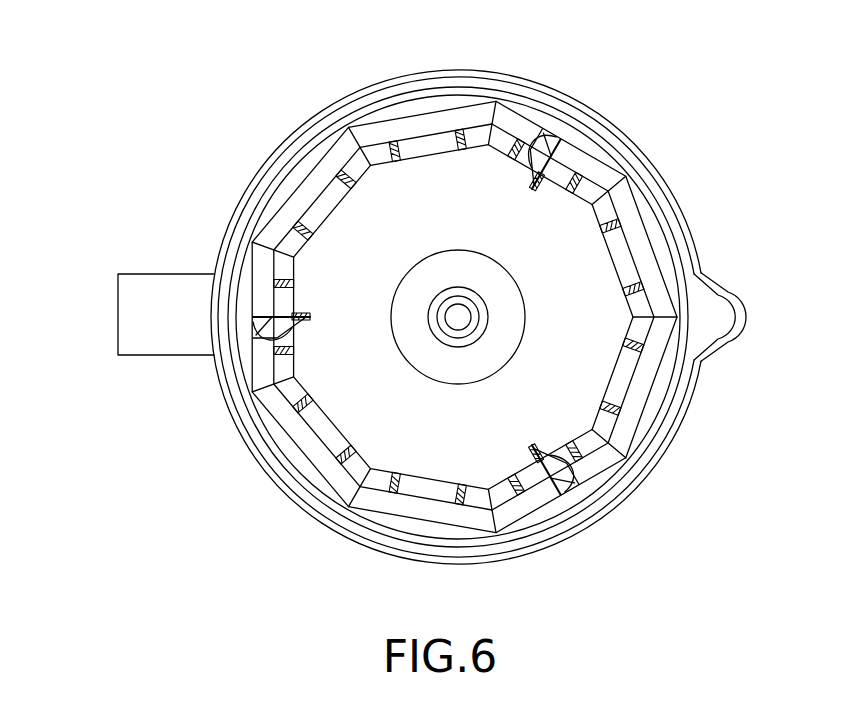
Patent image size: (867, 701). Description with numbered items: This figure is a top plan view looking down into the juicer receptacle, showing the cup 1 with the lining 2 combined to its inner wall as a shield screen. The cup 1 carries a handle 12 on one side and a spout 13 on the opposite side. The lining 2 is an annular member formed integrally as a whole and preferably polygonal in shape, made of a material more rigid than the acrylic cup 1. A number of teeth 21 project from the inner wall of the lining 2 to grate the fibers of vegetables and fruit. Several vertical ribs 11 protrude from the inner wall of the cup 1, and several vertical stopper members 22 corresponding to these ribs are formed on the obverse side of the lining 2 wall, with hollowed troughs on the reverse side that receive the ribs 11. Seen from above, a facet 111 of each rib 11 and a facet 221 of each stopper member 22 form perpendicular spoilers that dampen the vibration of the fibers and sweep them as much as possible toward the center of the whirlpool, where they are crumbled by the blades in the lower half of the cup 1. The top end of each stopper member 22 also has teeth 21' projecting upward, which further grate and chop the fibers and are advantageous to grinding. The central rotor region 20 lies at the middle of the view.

The cup 1 is at (681, 212).
The lining 2 is at (444, 317).
The teeth 21 is at (464, 278).
The teeth 21' is at (449, 355).
The stopper member 22 is at (518, 142).
The facet 221 is at (262, 316).
The vertical rib 11 is at (547, 140).
The facet 111 is at (563, 152).
The handle 12 is at (128, 313).
The spout 13 is at (723, 316).
The rotor 20 is at (587, 287).